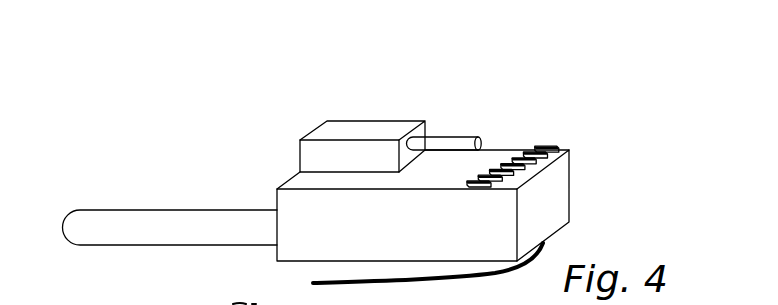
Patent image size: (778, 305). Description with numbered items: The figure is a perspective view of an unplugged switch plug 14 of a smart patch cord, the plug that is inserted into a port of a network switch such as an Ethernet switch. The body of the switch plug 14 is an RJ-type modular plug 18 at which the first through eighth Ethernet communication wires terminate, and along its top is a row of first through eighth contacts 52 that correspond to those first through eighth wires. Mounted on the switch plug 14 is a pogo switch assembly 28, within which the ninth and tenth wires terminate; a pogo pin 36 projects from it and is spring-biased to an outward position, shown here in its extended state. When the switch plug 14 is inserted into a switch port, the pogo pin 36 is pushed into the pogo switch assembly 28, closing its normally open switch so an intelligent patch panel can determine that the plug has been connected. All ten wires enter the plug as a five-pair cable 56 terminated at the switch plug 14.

The switch plug 14 is at (542, 63).
The RJ-45 plug 18 is at (558, 187).
The pogo switch assembly 28 is at (358, 128).
The pogo pin 36 is at (441, 143).
The first through eighth contacts 52 is at (543, 146).
The five-pair cable 56 is at (150, 227).